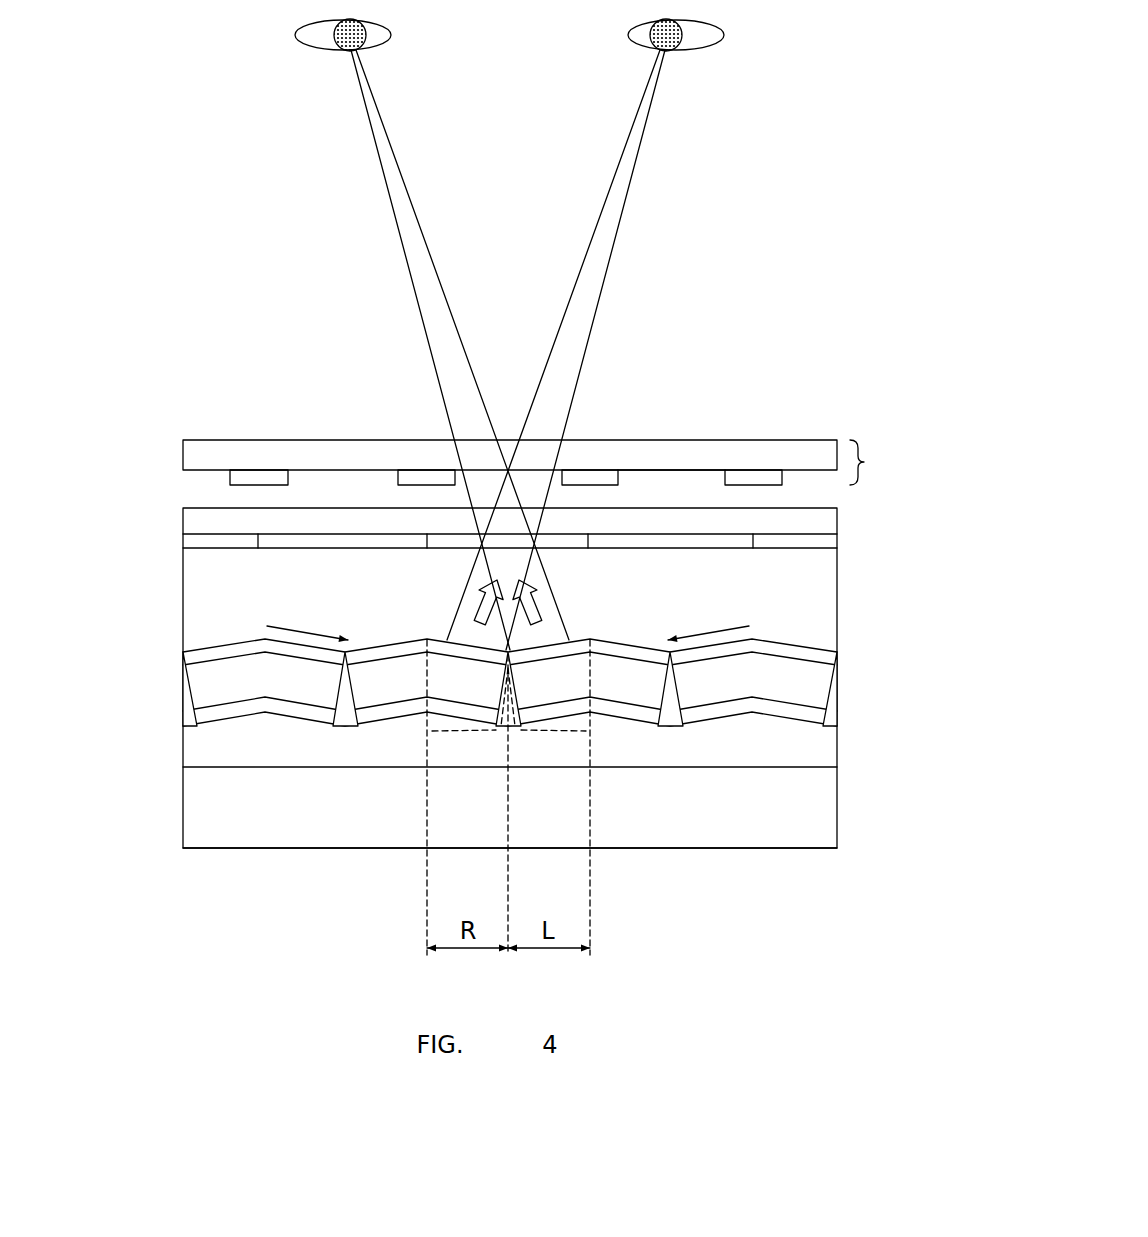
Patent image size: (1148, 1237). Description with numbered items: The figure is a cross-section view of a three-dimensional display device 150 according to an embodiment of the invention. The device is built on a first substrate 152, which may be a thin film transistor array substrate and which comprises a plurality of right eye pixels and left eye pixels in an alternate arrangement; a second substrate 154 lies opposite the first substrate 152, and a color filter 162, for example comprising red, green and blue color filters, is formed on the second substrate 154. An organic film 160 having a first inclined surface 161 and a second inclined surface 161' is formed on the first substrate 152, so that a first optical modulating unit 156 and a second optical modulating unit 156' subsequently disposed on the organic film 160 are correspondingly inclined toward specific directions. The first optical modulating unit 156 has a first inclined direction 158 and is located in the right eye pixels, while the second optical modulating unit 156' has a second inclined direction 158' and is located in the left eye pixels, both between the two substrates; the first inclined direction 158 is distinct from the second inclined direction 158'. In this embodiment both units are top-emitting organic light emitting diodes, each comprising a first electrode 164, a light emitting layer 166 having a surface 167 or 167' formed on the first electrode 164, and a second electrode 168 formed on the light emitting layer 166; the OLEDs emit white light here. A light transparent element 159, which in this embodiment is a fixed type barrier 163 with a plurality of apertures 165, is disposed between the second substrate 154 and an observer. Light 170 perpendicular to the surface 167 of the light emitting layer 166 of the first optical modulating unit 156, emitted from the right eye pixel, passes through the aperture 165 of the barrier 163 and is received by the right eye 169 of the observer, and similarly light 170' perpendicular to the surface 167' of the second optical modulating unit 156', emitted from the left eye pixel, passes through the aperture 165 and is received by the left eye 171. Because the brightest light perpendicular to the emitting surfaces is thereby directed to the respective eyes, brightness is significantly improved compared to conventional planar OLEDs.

The 3D display device 150 is at (890, 932).
The first substrate 152 is at (193, 813).
The second substrate 154 is at (190, 520).
The first optical modulating unit 156 is at (352, 774).
The second optical modulating unit 156' is at (674, 774).
The first inclined direction 158 is at (307, 605).
The second inclined direction 158' is at (708, 605).
The light transparent element 159 is at (547, 462).
The organic film 160 is at (197, 752).
The first inclined surface 161 is at (404, 810).
The second inclined surface 161' is at (618, 810).
The color filter 162 is at (187, 543).
The barrier 163 is at (753, 477).
The first electrode 164 is at (193, 718).
The aperture 165 is at (670, 471).
The light emitting layer 166 is at (195, 690).
The surface 167 is at (459, 782).
The surface 167' is at (560, 782).
The second electrode 168 is at (189, 660).
The right eye 169 is at (724, 34).
The light 170 is at (449, 595).
The light 170' is at (570, 595).
The left eye 171 is at (292, 34).